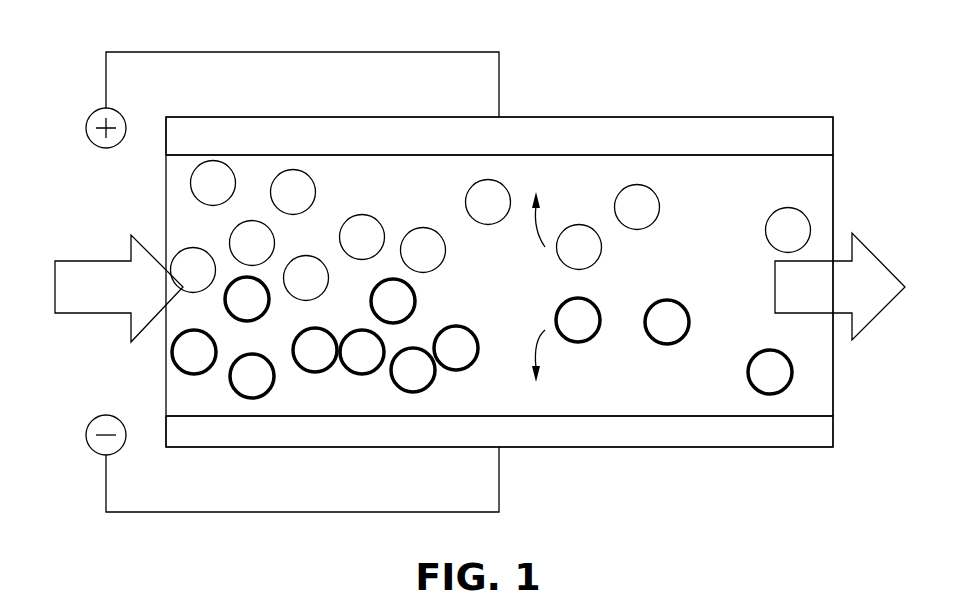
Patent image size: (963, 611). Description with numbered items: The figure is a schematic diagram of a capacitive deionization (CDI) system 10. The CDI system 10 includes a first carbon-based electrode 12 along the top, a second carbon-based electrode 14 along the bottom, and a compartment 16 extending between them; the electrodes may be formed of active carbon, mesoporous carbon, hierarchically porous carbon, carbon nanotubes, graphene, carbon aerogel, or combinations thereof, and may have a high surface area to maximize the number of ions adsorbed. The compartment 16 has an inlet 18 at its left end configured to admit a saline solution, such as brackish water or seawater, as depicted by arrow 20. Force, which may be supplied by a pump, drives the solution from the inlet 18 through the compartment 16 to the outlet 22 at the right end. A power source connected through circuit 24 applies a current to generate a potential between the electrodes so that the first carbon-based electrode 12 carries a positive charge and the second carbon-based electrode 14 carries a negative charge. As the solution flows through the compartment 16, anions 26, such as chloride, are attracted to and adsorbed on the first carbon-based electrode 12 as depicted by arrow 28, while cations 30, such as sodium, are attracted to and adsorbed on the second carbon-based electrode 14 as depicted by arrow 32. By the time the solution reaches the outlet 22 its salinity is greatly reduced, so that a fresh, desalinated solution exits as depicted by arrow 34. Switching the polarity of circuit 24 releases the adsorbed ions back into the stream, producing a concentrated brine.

The capacitive deionization (CDI) system 10 is at (788, 480).
The first carbon-based electrode 12 is at (735, 117).
The second carbon-based electrode 14 is at (735, 447).
The compartment 16 is at (822, 187).
The inlet 18 is at (182, 388).
The arrow 20 is at (55, 287).
The outlet 22 is at (820, 368).
The circuit 24 is at (220, 52).
The anions 26 is at (230, 242).
The arrow 28 is at (533, 222).
The cations 30 is at (413, 392).
The arrow 32 is at (536, 353).
The arrow 34 is at (880, 260).